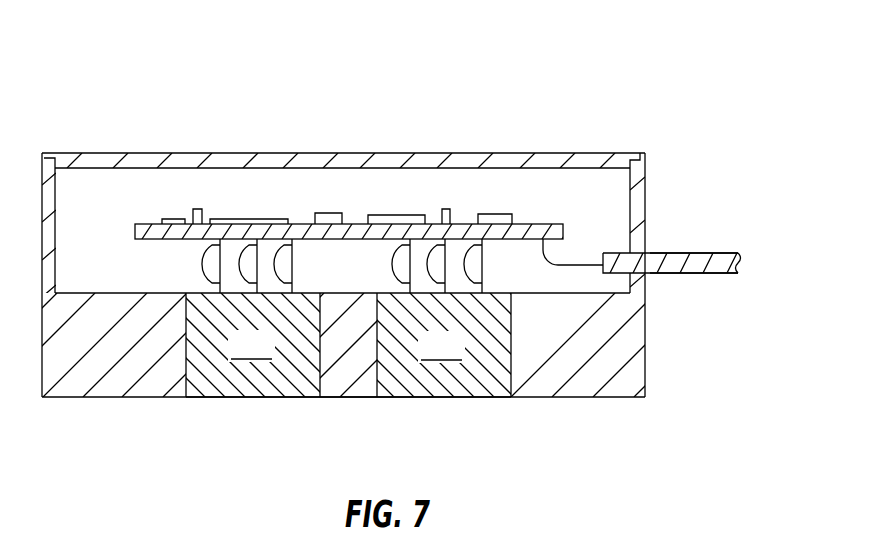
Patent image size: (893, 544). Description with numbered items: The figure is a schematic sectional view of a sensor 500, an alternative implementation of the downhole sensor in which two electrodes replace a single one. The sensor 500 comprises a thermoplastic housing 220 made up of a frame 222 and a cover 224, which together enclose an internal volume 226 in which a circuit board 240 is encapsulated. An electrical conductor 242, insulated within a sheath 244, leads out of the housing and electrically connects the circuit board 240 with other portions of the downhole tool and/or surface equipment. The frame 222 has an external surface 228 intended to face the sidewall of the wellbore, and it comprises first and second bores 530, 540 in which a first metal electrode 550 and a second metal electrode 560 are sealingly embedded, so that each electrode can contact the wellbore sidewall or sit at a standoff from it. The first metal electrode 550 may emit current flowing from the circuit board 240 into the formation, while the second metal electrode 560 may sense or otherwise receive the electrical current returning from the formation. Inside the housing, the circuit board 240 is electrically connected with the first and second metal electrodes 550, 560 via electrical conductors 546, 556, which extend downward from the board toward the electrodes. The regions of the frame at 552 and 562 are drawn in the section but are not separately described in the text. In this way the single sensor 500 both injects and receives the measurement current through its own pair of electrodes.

The sensor 500 is at (288, 97).
The thermoplastic housing 220 is at (649, 183).
The frame 222 is at (647, 355).
The cover 224 is at (472, 153).
The internal volume 226 is at (595, 193).
The external surface 228 is at (552, 398).
The circuit board 240 is at (152, 224).
The electrical conductor 242 is at (655, 274).
The sheath 244 is at (708, 273).
The first bore 530 is at (320, 380).
The second bore 540 is at (508, 383).
The electrical conductors 546 is at (273, 239).
The first metal electrode 550 is at (272, 359).
The first base portion 552 is at (235, 398).
The electrical conductors 556 is at (468, 239).
The second metal electrode 560 is at (462, 360).
The second base portion 562 is at (427, 398).